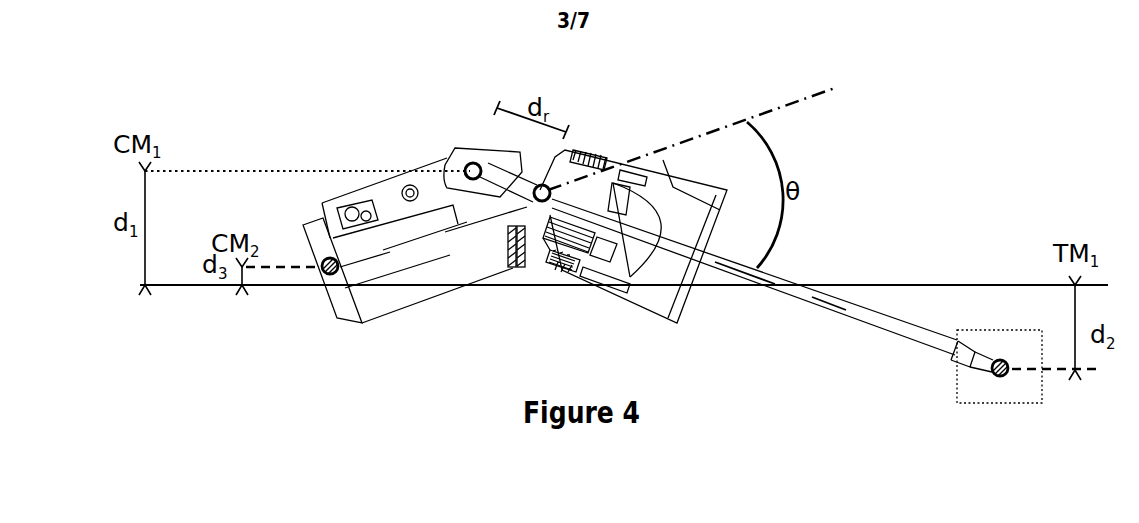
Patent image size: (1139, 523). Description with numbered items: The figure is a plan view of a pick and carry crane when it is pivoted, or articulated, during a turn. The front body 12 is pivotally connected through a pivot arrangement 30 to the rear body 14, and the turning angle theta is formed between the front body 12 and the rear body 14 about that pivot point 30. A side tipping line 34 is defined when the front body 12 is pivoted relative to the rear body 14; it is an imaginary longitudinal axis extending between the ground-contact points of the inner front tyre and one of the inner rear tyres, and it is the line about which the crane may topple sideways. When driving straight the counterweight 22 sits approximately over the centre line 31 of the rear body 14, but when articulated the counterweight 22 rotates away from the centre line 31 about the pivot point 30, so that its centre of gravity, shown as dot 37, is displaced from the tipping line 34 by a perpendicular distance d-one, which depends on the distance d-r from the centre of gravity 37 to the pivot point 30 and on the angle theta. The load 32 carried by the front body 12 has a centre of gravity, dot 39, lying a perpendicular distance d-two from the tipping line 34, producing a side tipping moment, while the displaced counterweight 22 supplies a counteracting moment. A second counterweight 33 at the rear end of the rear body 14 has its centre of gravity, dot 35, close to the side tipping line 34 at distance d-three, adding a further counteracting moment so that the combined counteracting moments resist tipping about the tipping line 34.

The front body 12 is at (685, 341).
The rear body 14 is at (413, 148).
The counterweight 22 is at (455, 142).
The pivot arrangement 30 is at (543, 214).
The centre line 31 is at (413, 253).
The load 32 is at (1014, 418).
The second counterweight 33 is at (351, 324).
The side tipping line 34 is at (538, 298).
The centre of gravity of second counterweight 35 is at (336, 287).
The centre of gravity of counterweight 37 is at (468, 142).
The centre of gravity of load 39 is at (1007, 345).